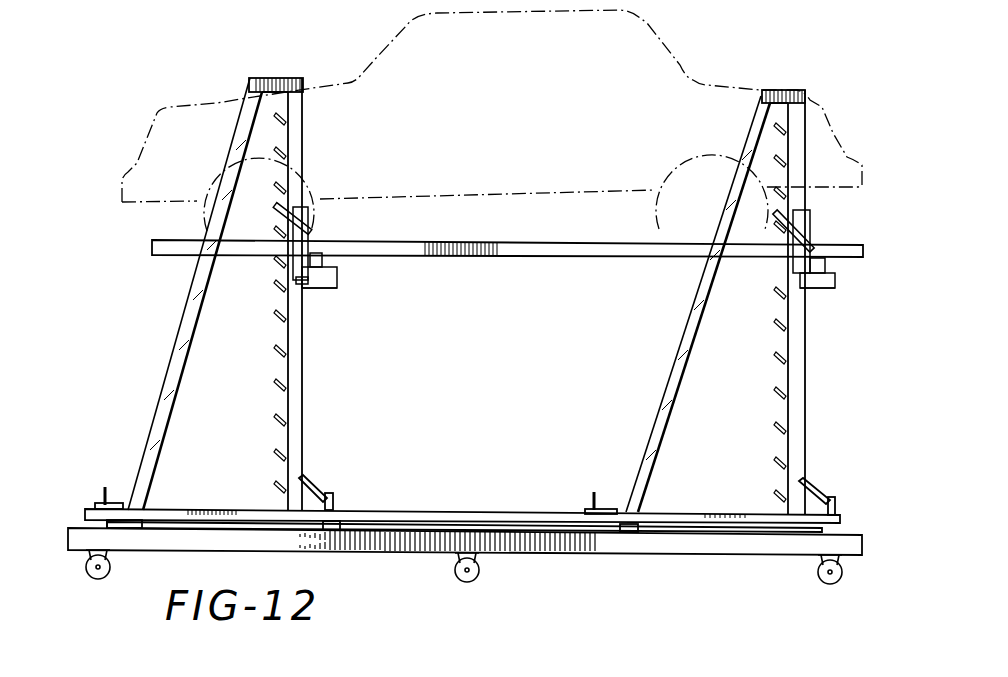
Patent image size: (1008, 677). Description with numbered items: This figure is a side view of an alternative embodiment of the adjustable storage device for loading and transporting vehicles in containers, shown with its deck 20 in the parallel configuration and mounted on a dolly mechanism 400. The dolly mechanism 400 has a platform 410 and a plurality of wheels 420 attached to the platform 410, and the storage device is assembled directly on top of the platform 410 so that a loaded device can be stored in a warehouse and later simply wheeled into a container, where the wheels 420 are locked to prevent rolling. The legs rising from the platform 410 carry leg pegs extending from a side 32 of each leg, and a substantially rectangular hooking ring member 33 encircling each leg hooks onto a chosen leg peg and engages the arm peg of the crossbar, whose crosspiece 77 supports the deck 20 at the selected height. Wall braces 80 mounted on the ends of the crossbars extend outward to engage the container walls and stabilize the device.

The deck 20 is at (481, 240).
The side of leg 32 is at (280, 195).
The hooking ring member 33 is at (276, 208).
The crosspiece 77 is at (318, 249).
The wall brace 80 is at (313, 292).
The dolly mechanism 400 is at (80, 526).
The platform 410 is at (248, 538).
The wheels 420 is at (110, 562).